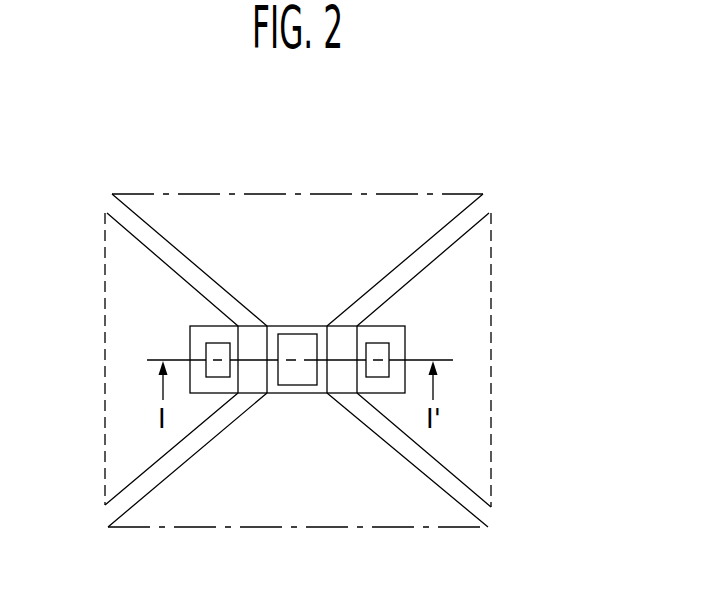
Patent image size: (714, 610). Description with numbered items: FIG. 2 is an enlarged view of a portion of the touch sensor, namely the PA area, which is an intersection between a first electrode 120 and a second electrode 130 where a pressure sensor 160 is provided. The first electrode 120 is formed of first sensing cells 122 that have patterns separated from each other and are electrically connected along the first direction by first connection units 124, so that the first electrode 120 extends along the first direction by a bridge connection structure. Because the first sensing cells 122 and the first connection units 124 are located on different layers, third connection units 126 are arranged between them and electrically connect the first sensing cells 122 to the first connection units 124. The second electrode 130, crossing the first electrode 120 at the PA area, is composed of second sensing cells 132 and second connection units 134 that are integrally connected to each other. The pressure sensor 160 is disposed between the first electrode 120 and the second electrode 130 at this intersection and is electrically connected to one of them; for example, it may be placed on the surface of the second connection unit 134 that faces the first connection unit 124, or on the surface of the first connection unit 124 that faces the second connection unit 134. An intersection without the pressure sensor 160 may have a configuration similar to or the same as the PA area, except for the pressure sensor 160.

The first electrode 120 is at (471, 268).
The first sensing cell 122 is at (475, 343).
The first connection unit 124 is at (402, 325).
The third connection unit 126 is at (390, 353).
The second electrode 130 is at (198, 214).
The second sensing cell 132 is at (347, 212).
The second connection unit 134 is at (266, 345).
The pressure sensor 160 is at (295, 386).
The PA area PA is at (521, 150).